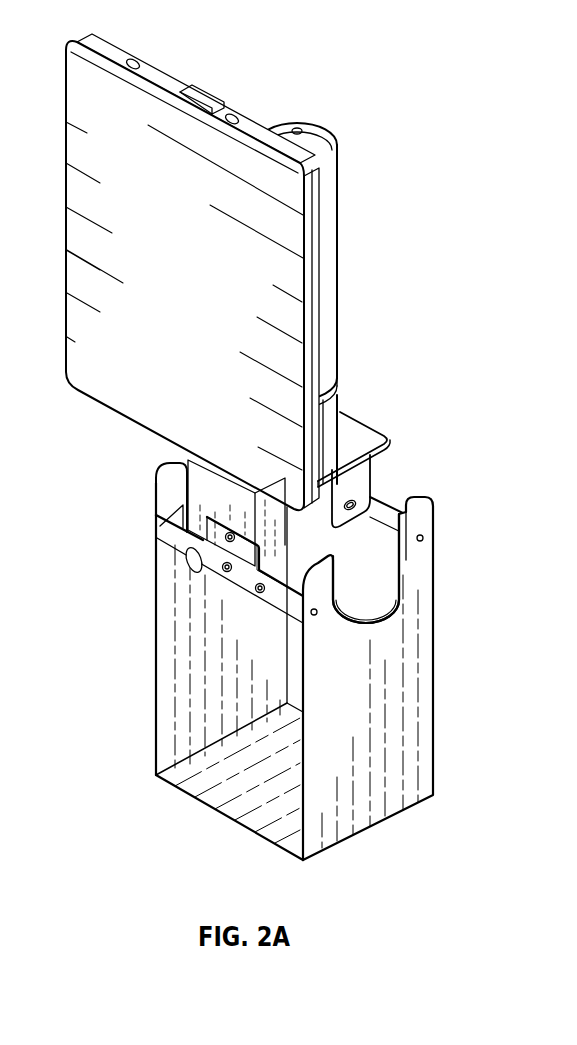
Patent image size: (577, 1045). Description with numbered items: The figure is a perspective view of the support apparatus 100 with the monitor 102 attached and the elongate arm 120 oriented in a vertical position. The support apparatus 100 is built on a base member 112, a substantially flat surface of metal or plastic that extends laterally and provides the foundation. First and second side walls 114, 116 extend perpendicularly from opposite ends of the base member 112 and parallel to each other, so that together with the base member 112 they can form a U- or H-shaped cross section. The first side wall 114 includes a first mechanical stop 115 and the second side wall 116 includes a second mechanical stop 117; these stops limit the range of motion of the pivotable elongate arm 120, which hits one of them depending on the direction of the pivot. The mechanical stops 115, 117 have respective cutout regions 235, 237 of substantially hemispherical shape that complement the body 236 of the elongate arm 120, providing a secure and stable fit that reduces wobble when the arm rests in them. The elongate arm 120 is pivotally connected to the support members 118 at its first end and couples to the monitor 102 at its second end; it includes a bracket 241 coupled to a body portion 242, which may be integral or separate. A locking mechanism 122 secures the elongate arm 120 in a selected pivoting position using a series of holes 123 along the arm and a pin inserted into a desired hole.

The support apparatus 100 is at (459, 497).
The monitor 102 is at (162, 409).
The base member 112 is at (232, 783).
The first side wall 114 is at (170, 633).
The first mechanical stop 115 is at (168, 488).
The second side wall 116 is at (412, 732).
The second mechanical stop 117 is at (393, 597).
The support members 118 is at (388, 522).
The elongate arm 120 is at (377, 340).
The locking mechanism 122 is at (187, 563).
The holes 123 is at (237, 545).
The cutout region 235 is at (195, 473).
The body 236 is at (324, 312).
The cutout region 237 is at (381, 613).
The bracket 241 is at (350, 428).
The body portion 242 is at (326, 200).